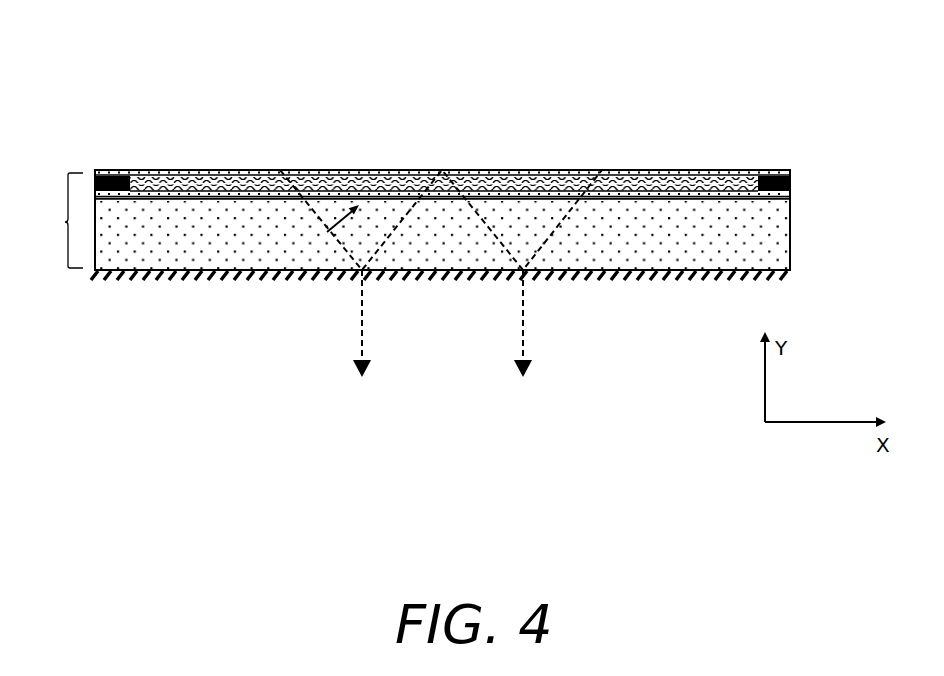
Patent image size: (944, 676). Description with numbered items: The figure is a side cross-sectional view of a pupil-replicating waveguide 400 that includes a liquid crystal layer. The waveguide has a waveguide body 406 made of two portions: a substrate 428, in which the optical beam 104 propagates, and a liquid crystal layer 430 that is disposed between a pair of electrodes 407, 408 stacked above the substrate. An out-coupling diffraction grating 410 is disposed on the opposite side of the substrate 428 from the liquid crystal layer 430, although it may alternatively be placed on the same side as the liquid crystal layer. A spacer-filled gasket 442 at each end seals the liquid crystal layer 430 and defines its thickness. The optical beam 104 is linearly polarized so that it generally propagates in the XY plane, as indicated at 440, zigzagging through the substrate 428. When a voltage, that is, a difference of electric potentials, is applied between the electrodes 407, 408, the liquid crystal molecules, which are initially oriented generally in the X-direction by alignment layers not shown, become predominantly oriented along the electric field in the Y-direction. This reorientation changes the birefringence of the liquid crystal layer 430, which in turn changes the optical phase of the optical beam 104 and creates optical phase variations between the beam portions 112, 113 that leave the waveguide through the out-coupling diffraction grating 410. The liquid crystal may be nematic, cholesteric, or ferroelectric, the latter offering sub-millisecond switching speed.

The pupil-replicating waveguide 400 is at (467, 118).
The waveguide body 406 is at (65, 222).
The electrode 408 is at (205, 170).
The optical beam 104 is at (314, 178).
The liquid crystal layer 430 is at (640, 178).
The electrode 407 is at (703, 178).
The spacer-filled gasket 442 is at (108, 176).
The substrate 428 is at (237, 246).
The out-coupling diffraction grating 410 is at (645, 280).
The beam propagation in the XY plane 440 is at (358, 200).
The beam portion 112 is at (344, 323).
The beam portion 113 is at (506, 323).